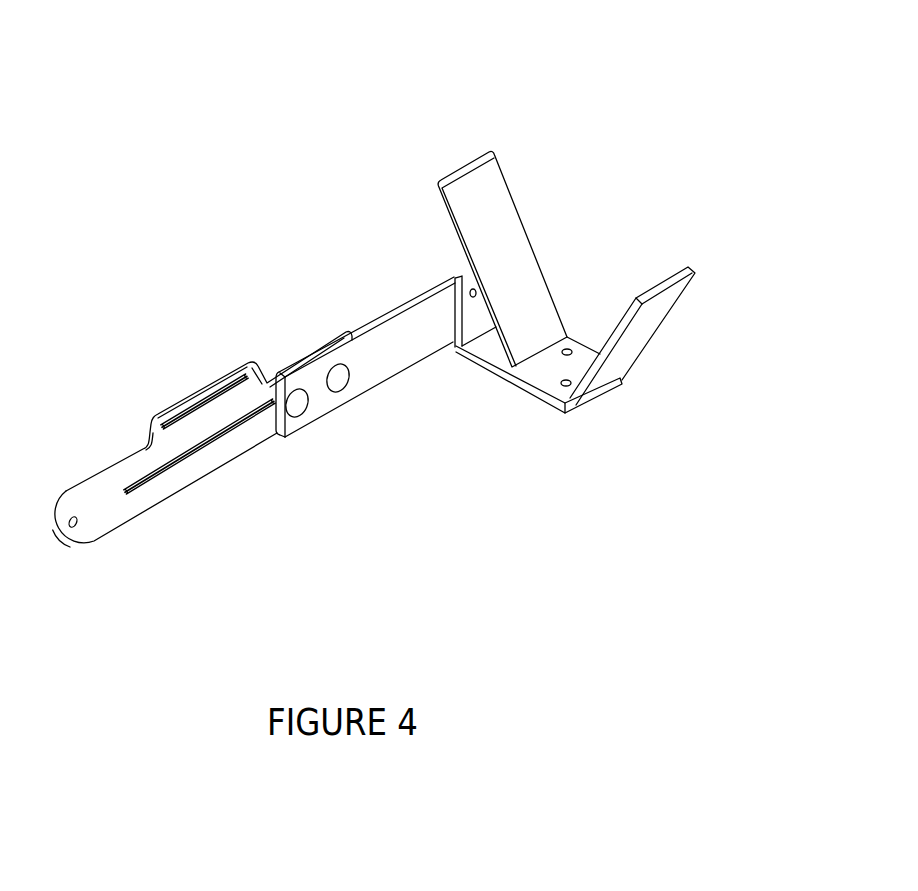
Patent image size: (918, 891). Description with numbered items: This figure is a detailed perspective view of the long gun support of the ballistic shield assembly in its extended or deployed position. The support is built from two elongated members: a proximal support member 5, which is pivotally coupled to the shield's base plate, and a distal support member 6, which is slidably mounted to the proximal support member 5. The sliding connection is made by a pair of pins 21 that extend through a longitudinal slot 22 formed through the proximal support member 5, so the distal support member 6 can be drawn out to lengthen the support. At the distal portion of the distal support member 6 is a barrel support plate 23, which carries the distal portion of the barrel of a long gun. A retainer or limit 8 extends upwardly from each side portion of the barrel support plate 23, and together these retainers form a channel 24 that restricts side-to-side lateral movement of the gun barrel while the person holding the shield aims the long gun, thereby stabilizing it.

The proximal support member 5 is at (110, 493).
The distal support member 6 is at (401, 347).
The retainer or limit 8 is at (492, 183).
The pin 21 is at (337, 373).
The longitudinal slot 22 is at (214, 441).
The barrel support plate 23 is at (578, 338).
The channel 24 is at (597, 278).